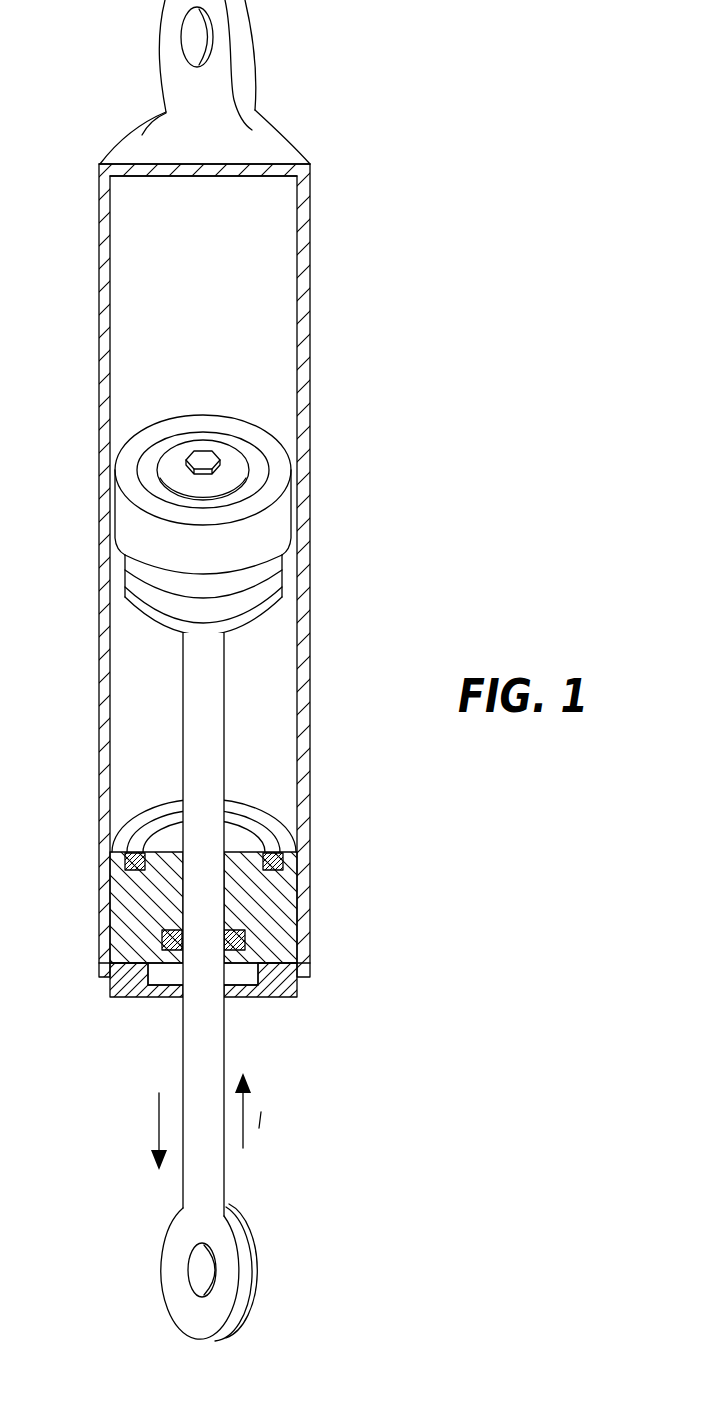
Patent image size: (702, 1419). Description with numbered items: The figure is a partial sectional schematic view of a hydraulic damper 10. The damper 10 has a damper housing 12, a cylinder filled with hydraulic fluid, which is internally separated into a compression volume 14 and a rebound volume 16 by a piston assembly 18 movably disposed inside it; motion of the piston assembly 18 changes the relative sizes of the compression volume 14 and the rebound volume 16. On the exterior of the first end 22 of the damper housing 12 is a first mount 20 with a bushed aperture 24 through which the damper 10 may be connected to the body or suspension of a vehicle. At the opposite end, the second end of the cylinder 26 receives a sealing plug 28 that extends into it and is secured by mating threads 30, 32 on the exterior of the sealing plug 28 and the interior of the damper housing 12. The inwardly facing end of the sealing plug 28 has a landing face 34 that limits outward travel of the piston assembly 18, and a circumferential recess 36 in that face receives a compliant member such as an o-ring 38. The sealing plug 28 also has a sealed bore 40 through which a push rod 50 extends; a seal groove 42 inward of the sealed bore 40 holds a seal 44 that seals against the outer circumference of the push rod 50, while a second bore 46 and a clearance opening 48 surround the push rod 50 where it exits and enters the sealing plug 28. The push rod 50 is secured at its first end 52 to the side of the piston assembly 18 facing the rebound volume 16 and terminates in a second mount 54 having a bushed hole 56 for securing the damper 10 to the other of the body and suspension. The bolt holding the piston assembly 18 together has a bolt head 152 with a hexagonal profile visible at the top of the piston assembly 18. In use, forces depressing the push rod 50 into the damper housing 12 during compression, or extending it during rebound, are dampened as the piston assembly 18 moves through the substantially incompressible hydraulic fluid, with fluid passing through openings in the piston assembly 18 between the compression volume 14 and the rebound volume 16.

The damper 10 is at (380, 404).
The damper housing 12 is at (308, 587).
The compression volume 14 is at (262, 341).
The rebound volume 16 is at (262, 743).
The piston assembly 18 is at (276, 522).
The first mount 20 is at (257, 32).
The first end 22 is at (310, 163).
The bushed aperture 24 is at (190, 28).
The second end of the cylinder 26 is at (298, 962).
The sealing plug 28 is at (135, 912).
The mating threads 30 is at (293, 880).
The mating threads 32 is at (296, 921).
The landing face 34 is at (282, 845).
The circumferential recess 36 is at (125, 858).
The o-ring 38 is at (257, 825).
The sealed bore 40 is at (193, 915).
The seal groove 42 is at (293, 982).
The seal 44 is at (170, 933).
The second bore 46 is at (257, 998).
The clearance opening 48 is at (227, 998).
The push rod 50 is at (192, 733).
The first end 52 is at (218, 652).
The second mount 54 is at (240, 1268).
The bushed hole 56 is at (197, 1280).
The bolt head 152 is at (205, 460).